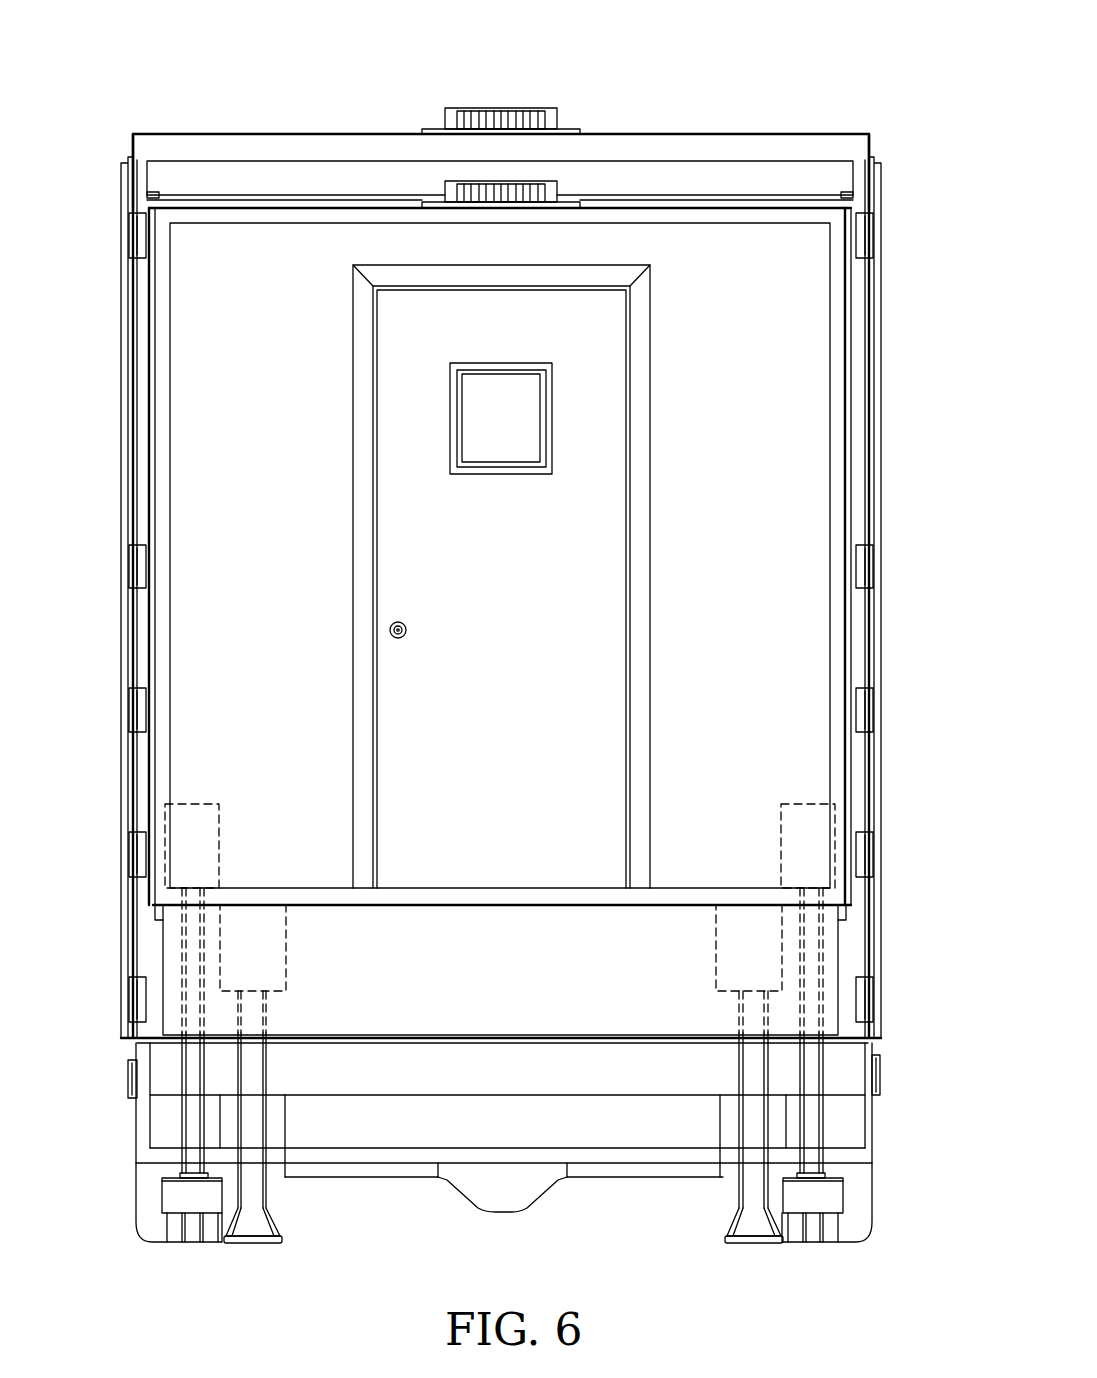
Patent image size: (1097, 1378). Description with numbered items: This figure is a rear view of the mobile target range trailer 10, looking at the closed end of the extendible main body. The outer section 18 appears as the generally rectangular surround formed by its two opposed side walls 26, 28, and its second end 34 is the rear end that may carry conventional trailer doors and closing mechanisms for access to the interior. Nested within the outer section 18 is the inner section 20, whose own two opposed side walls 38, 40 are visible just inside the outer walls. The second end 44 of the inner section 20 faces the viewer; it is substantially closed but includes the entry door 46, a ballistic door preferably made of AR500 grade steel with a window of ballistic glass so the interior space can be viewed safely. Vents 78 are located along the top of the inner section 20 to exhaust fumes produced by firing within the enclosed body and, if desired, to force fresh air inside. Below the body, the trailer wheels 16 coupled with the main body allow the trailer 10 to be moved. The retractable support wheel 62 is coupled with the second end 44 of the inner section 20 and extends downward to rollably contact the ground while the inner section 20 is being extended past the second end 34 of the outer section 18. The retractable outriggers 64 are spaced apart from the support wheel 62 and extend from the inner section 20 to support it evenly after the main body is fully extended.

The mobile target range trailer 10 is at (827, 72).
The trailer wheels 16 is at (140, 1186).
The outer section 18 is at (387, 133).
The inner section 20 is at (318, 207).
The side wall 26 is at (131, 772).
The side wall 28 is at (873, 772).
The second end 34 is at (662, 145).
The side wall 38 is at (156, 641).
The side wall 40 is at (847, 637).
The second end 44 is at (225, 511).
The entry door 46 is at (410, 397).
The retractable support wheel 62 is at (167, 1213).
The retractable outriggers 64 is at (267, 1200).
The vents 78 is at (556, 191).